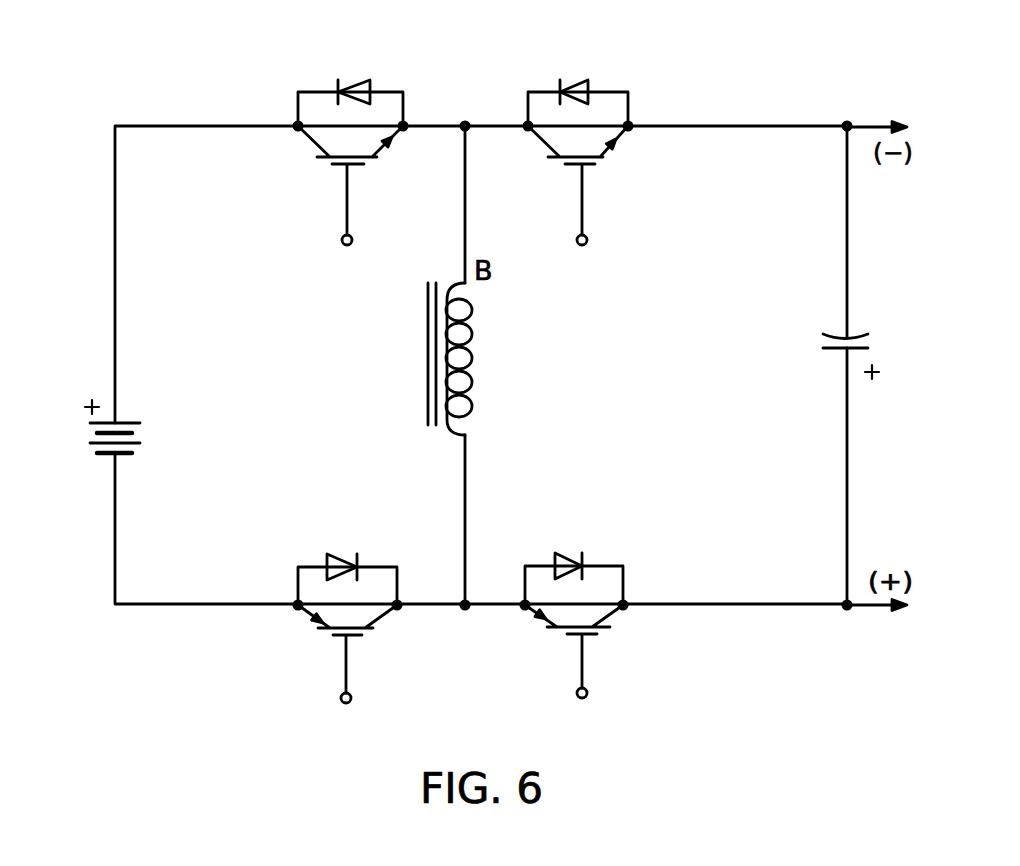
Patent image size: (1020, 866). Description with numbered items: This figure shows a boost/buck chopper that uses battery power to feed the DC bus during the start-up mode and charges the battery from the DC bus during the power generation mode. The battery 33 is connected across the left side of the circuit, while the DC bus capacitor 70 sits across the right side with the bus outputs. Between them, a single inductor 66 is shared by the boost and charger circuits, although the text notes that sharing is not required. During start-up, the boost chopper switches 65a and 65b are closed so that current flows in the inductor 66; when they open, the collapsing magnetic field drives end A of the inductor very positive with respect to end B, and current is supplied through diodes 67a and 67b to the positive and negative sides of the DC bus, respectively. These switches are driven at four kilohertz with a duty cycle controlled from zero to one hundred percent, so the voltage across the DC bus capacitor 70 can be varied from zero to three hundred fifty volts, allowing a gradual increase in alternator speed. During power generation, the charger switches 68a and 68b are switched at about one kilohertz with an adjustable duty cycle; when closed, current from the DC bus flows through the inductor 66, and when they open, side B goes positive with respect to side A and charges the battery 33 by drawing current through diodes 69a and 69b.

The battery 33 is at (92, 395).
The boost chopper switch 65a is at (330, 170).
The boost chopper switch 65b is at (325, 645).
The inductor 66 is at (428, 320).
The diode 67a is at (580, 80).
The diode 67b is at (567, 553).
The charger switch 68a is at (572, 170).
The charger switch 68b is at (555, 645).
The diode 69a is at (360, 80).
The diode 69b is at (347, 553).
The DC bus capacitor 70 is at (857, 335).